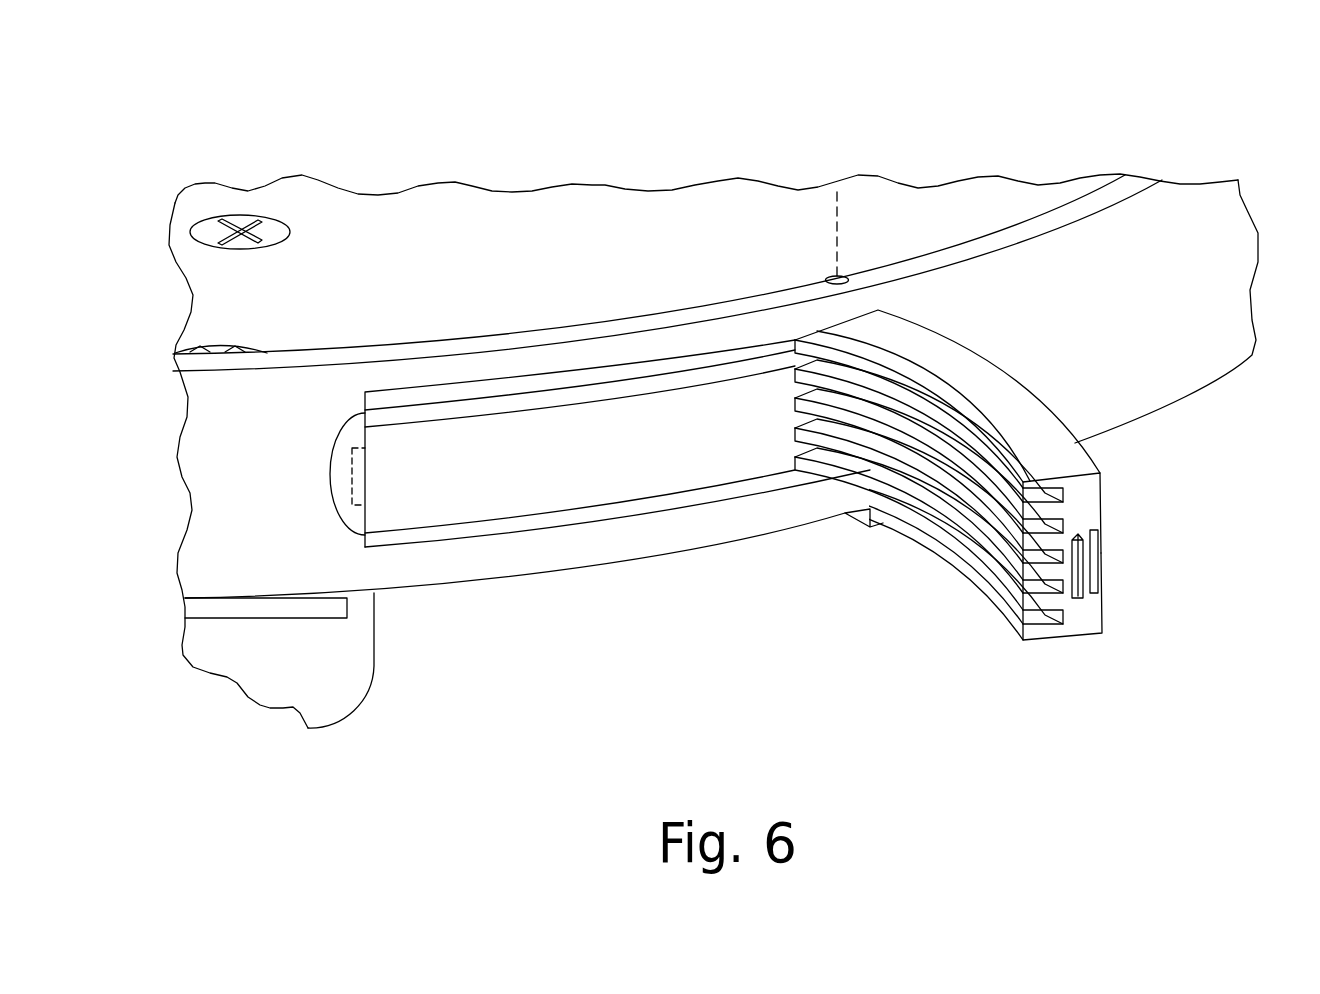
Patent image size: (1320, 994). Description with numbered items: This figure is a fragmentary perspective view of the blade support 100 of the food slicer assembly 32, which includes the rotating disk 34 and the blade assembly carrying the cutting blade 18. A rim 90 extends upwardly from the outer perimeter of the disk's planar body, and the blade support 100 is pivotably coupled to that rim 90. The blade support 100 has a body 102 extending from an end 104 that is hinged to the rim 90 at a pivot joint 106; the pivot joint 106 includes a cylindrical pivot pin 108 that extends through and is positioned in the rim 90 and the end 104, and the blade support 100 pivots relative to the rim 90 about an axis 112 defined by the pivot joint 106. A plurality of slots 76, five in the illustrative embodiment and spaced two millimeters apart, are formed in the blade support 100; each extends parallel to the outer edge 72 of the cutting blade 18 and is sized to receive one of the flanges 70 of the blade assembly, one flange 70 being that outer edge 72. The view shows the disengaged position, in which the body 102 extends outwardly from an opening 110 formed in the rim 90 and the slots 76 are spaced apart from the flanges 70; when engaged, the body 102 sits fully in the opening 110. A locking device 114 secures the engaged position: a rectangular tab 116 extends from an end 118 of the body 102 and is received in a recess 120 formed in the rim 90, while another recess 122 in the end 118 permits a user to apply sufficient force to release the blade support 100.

The cutting blade 18 is at (575, 200).
The food slicer assembly 32 is at (1167, 103).
The rotating disk 34 is at (1222, 266).
The flanges 70 is at (545, 398).
The outer edge 72 is at (545, 398).
The slots 76 is at (1045, 620).
The rim 90 is at (1092, 197).
The blade support 100 is at (973, 378).
The body 102 is at (1086, 455).
The end 104 is at (876, 326).
The pivot joint 106 is at (852, 273).
The pivot pin 108 is at (835, 276).
The opening 110 is at (483, 527).
The axis 112 is at (840, 201).
The locking device 114 is at (1124, 563).
The tab 116 is at (1079, 536).
The end 118 is at (1102, 633).
The recess 120 is at (368, 470).
The recess 122 is at (1098, 583).